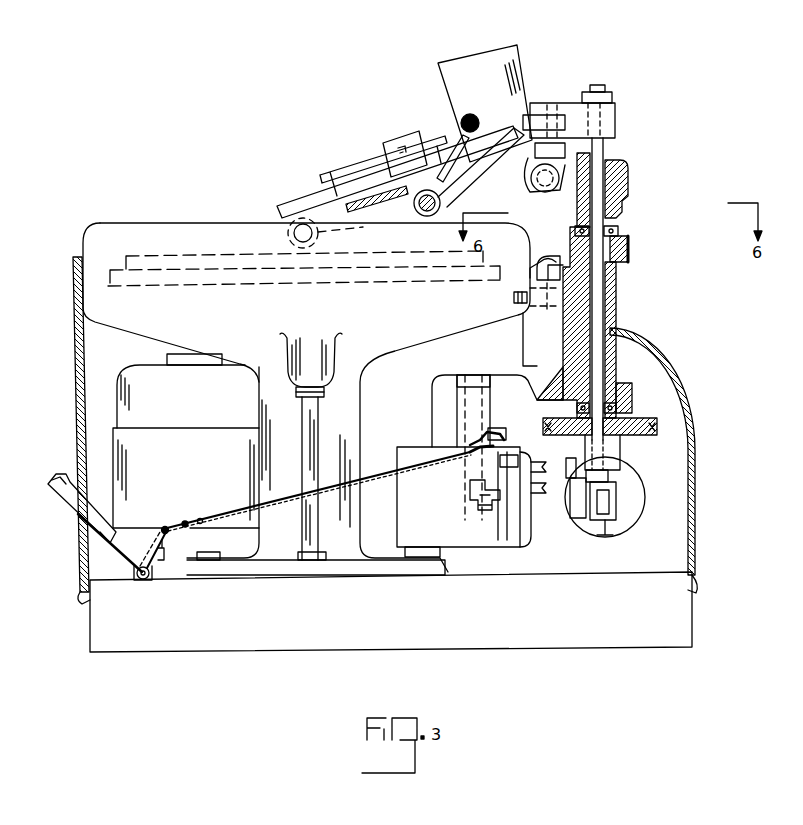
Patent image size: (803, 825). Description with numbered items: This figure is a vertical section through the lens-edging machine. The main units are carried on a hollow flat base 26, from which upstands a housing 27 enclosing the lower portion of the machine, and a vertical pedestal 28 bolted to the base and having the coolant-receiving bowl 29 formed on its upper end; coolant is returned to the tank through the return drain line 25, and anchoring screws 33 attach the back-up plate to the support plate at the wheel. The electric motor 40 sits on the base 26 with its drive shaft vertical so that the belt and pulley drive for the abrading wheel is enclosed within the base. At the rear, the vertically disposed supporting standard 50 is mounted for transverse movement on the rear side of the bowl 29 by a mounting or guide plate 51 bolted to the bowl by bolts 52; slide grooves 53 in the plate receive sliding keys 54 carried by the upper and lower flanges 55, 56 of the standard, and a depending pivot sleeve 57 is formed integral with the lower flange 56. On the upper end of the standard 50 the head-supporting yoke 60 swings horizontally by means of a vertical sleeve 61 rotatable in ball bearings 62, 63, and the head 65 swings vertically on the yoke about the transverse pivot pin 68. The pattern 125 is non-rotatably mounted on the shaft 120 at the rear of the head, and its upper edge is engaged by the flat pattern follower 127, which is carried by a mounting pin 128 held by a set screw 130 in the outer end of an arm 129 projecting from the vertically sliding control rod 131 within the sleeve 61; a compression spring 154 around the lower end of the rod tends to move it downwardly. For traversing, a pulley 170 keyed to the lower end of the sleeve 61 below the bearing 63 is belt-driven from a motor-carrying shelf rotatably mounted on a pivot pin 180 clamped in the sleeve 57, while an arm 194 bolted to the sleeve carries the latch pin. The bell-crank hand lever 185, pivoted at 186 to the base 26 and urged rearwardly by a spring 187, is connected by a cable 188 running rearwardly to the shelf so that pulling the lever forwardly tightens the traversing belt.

The return drain line 25 is at (318, 437).
The base 26 is at (98, 634).
The housing 27 is at (80, 407).
The pedestal 28 is at (265, 412).
The coolant-receiving bowl 29 is at (137, 240).
The anchoring screws 33 is at (535, 271).
The electric motor 40 is at (137, 406).
The supporting standard 50 is at (588, 292).
The mounting or guide plate 51 is at (548, 350).
The bolts 52 is at (514, 298).
The slide grooves 53 is at (548, 365).
The sliding keys 54 is at (546, 302).
The upper flange 55 is at (548, 262).
The lower flange 56 is at (527, 494).
The pivot sleeve 57 is at (466, 466).
The head-supporting yoke 60 is at (626, 175).
The vertical sleeve 61 is at (630, 250).
The ball bearing 62 is at (620, 230).
The ball bearing 63 is at (628, 395).
The head 65 is at (403, 193).
The transverse pivot pin 68 is at (427, 216).
The shaft 120 is at (598, 150).
The pattern 125 is at (518, 50).
The pattern follower 127 is at (551, 168).
The mounting pin 128 is at (545, 105).
The arm 129 is at (558, 112).
The set screw 130 is at (512, 135).
The control rod 131 is at (586, 165).
The compression spring 154 is at (612, 455).
The pulley 170 is at (640, 430).
The pivot pin 180 is at (470, 417).
The hand lever 185 is at (78, 516).
The pivot 186 is at (143, 581).
The spring 187 is at (166, 545).
The cable 188 is at (234, 513).
The arm 194 is at (482, 428).